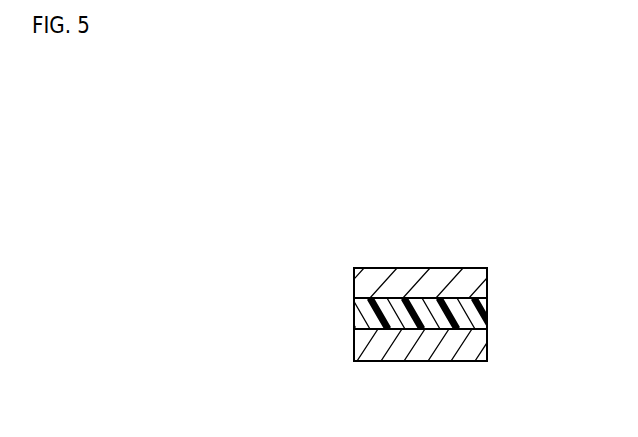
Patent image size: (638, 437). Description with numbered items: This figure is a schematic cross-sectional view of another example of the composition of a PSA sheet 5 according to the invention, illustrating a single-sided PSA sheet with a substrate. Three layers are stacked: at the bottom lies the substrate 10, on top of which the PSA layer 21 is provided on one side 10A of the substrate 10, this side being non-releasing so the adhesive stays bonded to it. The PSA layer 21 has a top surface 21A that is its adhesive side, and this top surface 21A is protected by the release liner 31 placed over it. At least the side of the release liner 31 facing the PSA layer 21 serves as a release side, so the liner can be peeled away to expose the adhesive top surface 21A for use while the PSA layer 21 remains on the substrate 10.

The PSA sheet 5 is at (463, 225).
The release liner 31 is at (487, 273).
The PSA layer 21 is at (487, 310).
The substrate 10 is at (487, 340).
The top surface of the PSA layer 21A is at (378, 298).
The one side of the substrate 10A is at (375, 329).